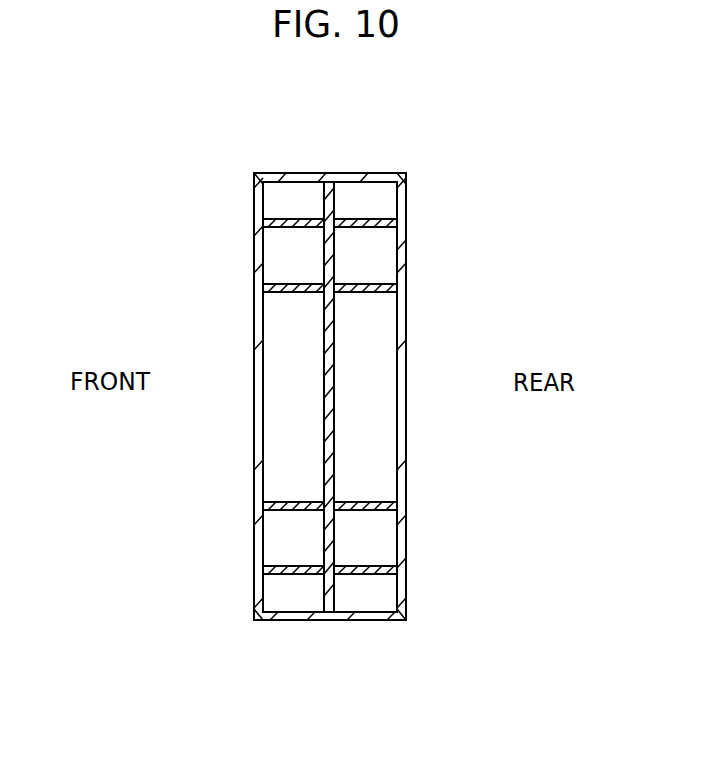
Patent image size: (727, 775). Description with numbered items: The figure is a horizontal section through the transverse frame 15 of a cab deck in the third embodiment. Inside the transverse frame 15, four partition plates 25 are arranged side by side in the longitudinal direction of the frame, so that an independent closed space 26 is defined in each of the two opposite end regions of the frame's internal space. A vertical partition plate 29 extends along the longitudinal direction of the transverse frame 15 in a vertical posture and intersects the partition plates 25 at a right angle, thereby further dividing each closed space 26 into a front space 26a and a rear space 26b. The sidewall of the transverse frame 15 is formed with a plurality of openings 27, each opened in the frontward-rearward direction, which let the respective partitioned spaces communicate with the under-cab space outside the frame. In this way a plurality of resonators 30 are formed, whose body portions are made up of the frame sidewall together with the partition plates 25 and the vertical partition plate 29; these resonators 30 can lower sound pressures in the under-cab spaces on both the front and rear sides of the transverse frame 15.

The transverse frame 15 is at (253, 429).
The partition plate 25 is at (358, 292).
The closed space 26 is at (398, 122).
The front space 26a is at (293, 235).
The rear space 26b is at (363, 235).
The opening 27 is at (258, 253).
The vertical partition plate 29 is at (336, 404).
The resonator 30 is at (251, 274).